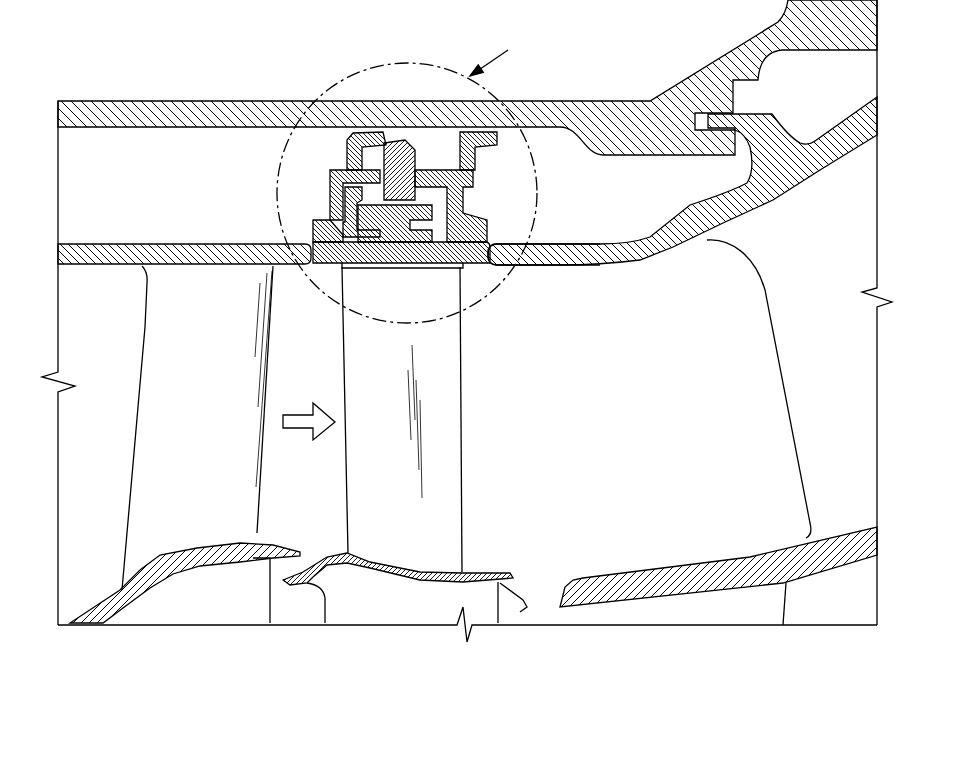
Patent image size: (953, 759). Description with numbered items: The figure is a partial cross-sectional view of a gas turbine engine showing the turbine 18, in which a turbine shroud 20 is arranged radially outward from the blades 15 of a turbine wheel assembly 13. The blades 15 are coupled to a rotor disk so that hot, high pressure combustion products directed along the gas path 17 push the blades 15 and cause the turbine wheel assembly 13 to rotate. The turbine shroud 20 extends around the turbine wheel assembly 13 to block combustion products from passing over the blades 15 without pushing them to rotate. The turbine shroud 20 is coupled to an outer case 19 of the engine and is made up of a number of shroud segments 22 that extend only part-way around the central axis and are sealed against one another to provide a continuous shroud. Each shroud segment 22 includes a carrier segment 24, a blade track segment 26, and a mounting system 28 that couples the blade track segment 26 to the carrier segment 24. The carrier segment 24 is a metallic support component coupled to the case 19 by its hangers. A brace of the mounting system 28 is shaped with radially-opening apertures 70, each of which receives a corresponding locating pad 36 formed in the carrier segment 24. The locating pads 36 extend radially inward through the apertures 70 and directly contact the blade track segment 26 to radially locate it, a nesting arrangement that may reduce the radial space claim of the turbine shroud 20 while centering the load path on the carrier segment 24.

The turbine wheel assembly 13 is at (488, 500).
The blades 15 is at (437, 482).
The gas path 17 is at (318, 381).
The turbine 18 is at (128, 70).
The outer case 19 is at (238, 97).
The turbine shroud 20 is at (550, 280).
The shroud segments 22 is at (505, 277).
The carrier segment 24 is at (481, 198).
The blade track segment 26 is at (410, 272).
The mounting system 28 is at (342, 161).
The locating pads 36 is at (330, 190).
The radially-opening apertures 70 is at (391, 148).